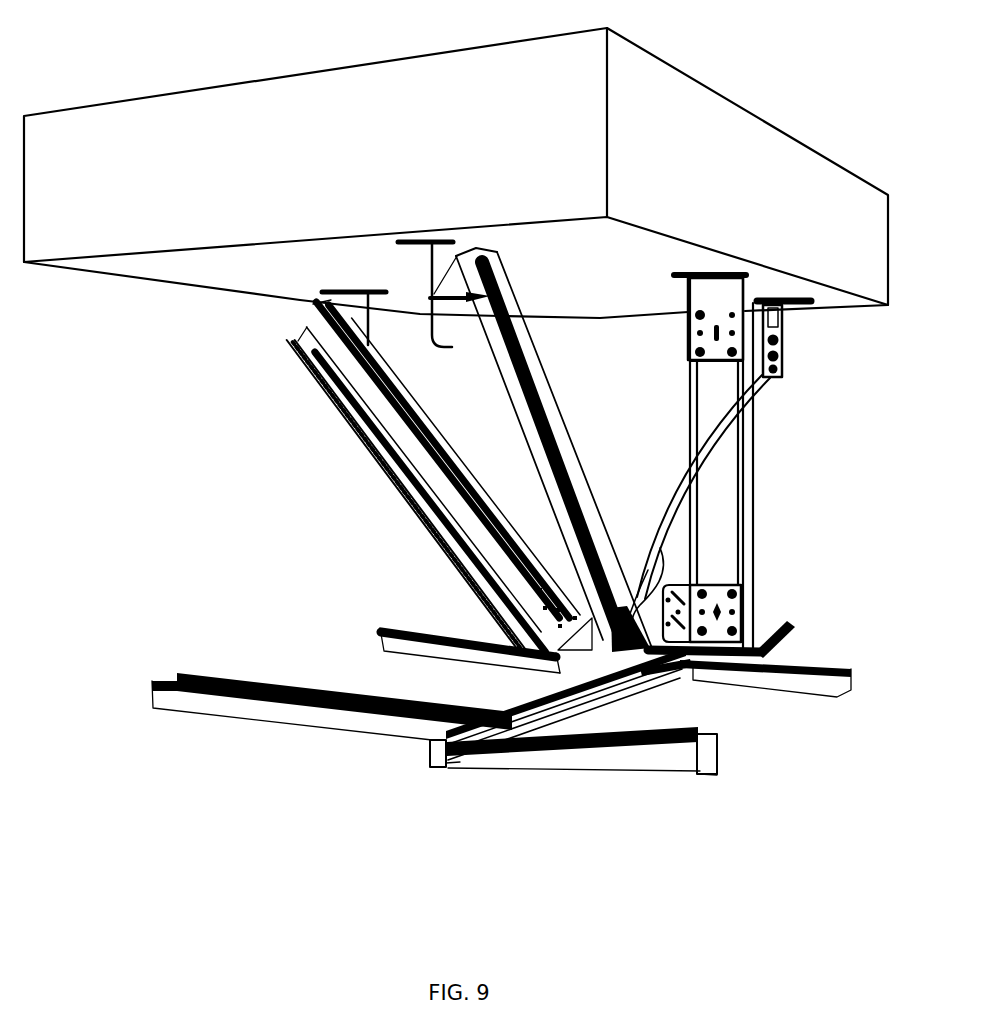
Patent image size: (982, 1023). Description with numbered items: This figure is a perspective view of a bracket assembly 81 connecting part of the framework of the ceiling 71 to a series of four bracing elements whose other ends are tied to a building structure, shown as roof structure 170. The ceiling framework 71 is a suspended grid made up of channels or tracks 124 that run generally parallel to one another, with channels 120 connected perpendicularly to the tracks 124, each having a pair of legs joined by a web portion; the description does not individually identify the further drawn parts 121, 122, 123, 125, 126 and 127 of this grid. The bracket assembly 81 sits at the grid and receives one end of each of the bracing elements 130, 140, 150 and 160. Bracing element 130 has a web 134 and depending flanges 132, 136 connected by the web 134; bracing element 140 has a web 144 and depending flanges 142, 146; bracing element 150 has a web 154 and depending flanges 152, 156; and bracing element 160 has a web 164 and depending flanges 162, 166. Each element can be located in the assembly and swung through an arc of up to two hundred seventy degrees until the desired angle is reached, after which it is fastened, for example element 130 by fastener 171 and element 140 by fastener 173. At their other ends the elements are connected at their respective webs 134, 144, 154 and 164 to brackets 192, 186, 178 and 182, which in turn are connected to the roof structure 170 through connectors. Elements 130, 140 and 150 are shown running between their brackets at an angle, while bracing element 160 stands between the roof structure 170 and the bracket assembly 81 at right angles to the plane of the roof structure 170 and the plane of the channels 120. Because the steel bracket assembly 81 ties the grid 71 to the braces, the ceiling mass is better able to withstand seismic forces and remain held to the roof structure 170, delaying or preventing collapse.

The roof structure 170 is at (188, 90).
The bracket 186 is at (452, 240).
The bracket 192 is at (323, 295).
The bracket 182 is at (688, 305).
The bracket 178 is at (809, 372).
The bracing element 130 is at (427, 477).
The depending flange 132 is at (320, 395).
The web 134 is at (423, 462).
The depending flange 136 is at (393, 368).
The bracing element 140 is at (538, 450).
The depending flange 142 is at (513, 457).
The web 144 is at (517, 383).
The depending flange 146 is at (530, 345).
The bracing element 150 is at (695, 503).
The depending flange 152 is at (662, 540).
The web 154 is at (762, 384).
The depending flange 156 is at (772, 422).
The bracing element 160 is at (734, 466).
The depending flange 162 is at (688, 418).
The web 164 is at (723, 503).
The depending flange 166 is at (747, 548).
The fastener 171 is at (510, 593).
The fastener 173 is at (622, 612).
The channel 120 is at (447, 770).
The beam end cap 121 is at (430, 748).
The base beam 122 is at (533, 710).
The beam joint 123 is at (498, 757).
The track 124 is at (843, 697).
The base beam 125 is at (637, 753).
The beam end 126 is at (700, 776).
The beam end cap 127 is at (717, 753).
The bracket assembly 81 is at (687, 682).
The ceiling framework 71 is at (523, 728).